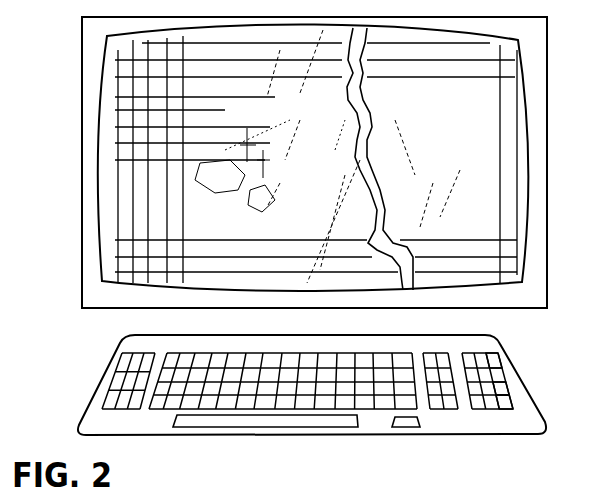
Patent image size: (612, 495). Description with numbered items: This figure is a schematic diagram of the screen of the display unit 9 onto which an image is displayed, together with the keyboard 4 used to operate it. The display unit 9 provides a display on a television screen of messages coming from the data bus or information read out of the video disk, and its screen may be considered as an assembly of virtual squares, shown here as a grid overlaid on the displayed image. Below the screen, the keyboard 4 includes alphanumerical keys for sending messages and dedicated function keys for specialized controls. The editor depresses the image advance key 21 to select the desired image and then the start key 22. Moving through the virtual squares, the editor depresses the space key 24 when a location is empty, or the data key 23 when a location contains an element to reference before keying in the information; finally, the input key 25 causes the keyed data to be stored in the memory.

The display unit 9 is at (547, 210).
The keyboard 4 is at (78, 395).
The image advance key 21 is at (493, 360).
The start key 22 is at (498, 388).
The data key 23 is at (508, 407).
The space key 24 is at (262, 423).
The input key 25 is at (408, 428).